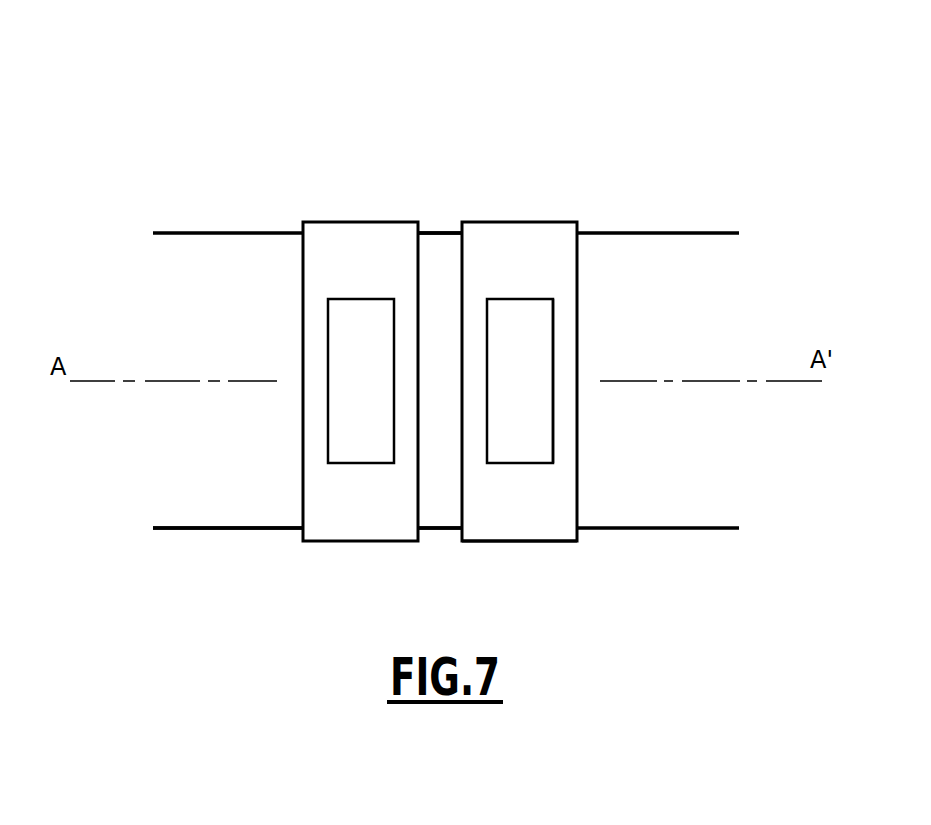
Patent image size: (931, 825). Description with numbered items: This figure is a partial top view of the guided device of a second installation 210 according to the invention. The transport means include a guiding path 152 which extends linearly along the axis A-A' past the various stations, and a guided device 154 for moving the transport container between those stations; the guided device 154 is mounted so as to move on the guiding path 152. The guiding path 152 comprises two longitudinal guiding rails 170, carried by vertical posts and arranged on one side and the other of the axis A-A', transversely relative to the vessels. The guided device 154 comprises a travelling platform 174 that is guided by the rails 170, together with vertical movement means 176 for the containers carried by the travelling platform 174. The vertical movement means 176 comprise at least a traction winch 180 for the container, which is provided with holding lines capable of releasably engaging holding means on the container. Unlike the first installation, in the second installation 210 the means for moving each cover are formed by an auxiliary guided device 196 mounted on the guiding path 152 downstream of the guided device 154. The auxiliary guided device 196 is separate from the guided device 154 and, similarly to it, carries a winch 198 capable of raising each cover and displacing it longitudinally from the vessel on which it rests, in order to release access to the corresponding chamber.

The guiding path 152 is at (231, 537).
The guided device 154 is at (544, 555).
The longitudinal guiding rails 170 is at (700, 232).
The travelling platform 174 is at (520, 233).
The vertical movement means 176 is at (559, 432).
The traction winch 180 is at (559, 339).
The auxiliary guided device 196 is at (357, 213).
The winch 198 is at (319, 332).
The second installation 210 is at (494, 110).